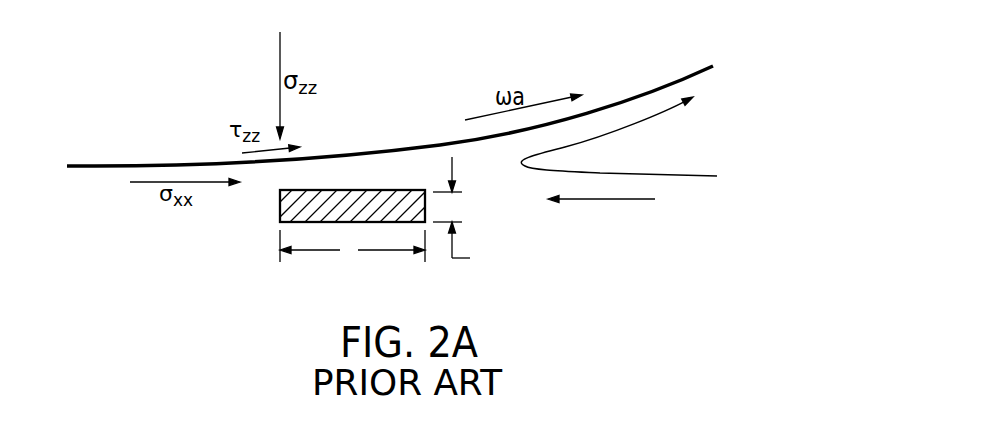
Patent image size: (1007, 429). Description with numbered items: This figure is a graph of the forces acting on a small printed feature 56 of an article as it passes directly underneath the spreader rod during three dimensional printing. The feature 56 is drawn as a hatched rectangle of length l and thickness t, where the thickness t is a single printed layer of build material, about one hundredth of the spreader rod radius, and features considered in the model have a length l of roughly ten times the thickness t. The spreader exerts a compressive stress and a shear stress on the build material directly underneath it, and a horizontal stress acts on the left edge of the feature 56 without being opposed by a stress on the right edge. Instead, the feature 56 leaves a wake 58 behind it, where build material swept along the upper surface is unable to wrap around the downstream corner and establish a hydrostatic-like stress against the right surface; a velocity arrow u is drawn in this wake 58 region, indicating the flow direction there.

The feature 56 is at (250, 205).
The wake 58 is at (595, 180).
The length l is at (350, 259).
The thickness t is at (452, 209).
The flow velocity u is at (601, 210).